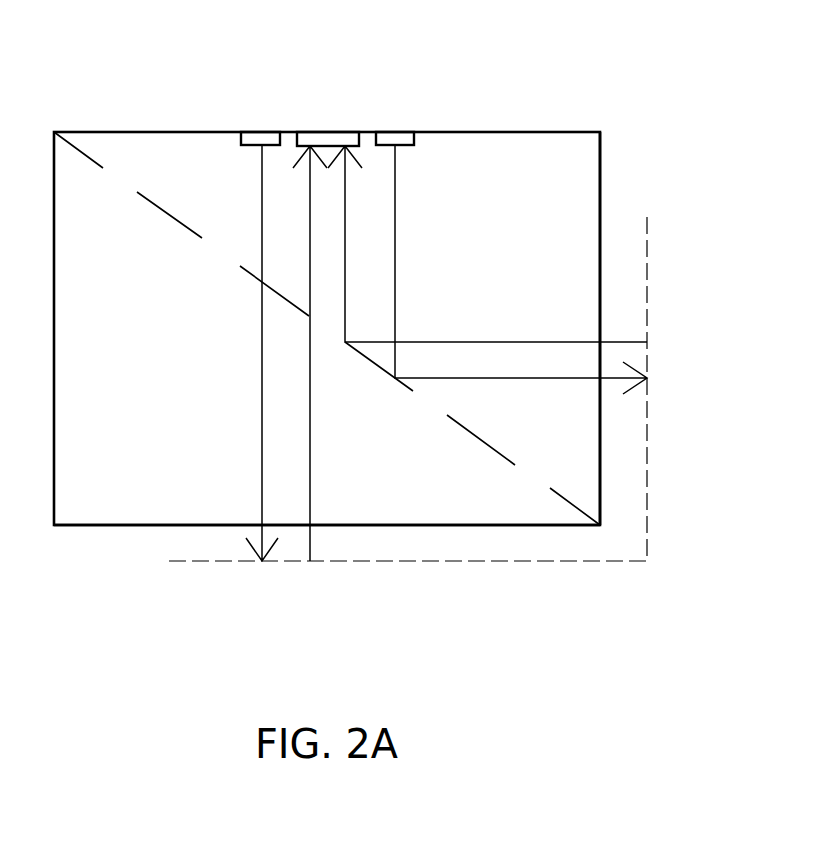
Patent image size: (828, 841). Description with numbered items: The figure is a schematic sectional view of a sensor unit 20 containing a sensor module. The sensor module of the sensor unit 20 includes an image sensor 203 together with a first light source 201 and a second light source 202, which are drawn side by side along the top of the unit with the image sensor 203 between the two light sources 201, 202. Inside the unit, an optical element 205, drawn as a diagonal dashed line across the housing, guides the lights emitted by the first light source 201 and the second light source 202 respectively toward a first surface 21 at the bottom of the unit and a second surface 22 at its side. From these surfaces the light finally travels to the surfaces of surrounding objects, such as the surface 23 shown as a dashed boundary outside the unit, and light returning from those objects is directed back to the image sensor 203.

The sensor unit 20 is at (610, 108).
The first surface 21 is at (108, 526).
The second surface 22 is at (600, 172).
The surface of surrounding object 23 is at (404, 563).
The first light source 201 is at (262, 131).
The second light source 202 is at (398, 131).
The image sensor 203 is at (337, 131).
The optical element 205 is at (481, 443).